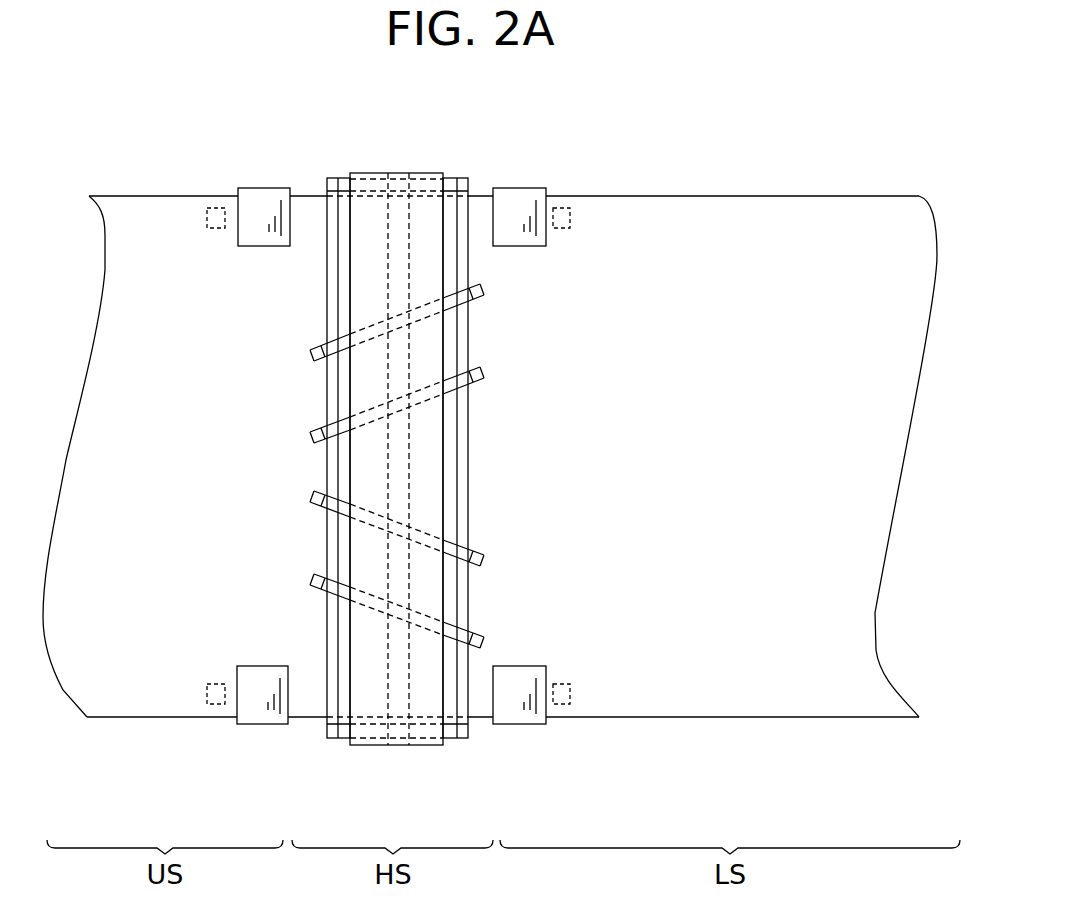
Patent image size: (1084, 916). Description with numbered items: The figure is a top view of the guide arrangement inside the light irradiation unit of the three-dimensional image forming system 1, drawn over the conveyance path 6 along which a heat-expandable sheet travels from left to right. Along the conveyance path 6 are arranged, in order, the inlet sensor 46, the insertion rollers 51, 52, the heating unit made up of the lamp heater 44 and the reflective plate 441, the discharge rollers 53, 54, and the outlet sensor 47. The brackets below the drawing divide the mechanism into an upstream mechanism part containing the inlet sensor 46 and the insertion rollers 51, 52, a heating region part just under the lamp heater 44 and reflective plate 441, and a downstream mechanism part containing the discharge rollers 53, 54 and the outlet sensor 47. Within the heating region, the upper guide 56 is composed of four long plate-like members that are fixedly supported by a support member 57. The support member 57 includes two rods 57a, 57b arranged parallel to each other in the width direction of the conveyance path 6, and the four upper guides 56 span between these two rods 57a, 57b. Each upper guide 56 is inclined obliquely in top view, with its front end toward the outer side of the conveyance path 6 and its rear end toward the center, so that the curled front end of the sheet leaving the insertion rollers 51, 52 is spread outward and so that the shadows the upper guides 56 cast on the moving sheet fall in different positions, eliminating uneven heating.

The three-dimensional image forming system 1 is at (229, 134).
The conveyance path 6 is at (148, 208).
The lamp heater 44 is at (388, 205).
The reflective plate 441 is at (435, 173).
The inlet sensor 46 is at (218, 205).
The outlet sensor 47 is at (562, 200).
The insertion roller 51 is at (296, 458).
The insertion roller 52 is at (282, 188).
The discharge roller 53 is at (553, 458).
The discharge roller 54 is at (525, 188).
The upper guide 56 is at (316, 355).
The support member 57 is at (470, 330).
The rod 57a is at (328, 275).
The rod 57b is at (468, 280).